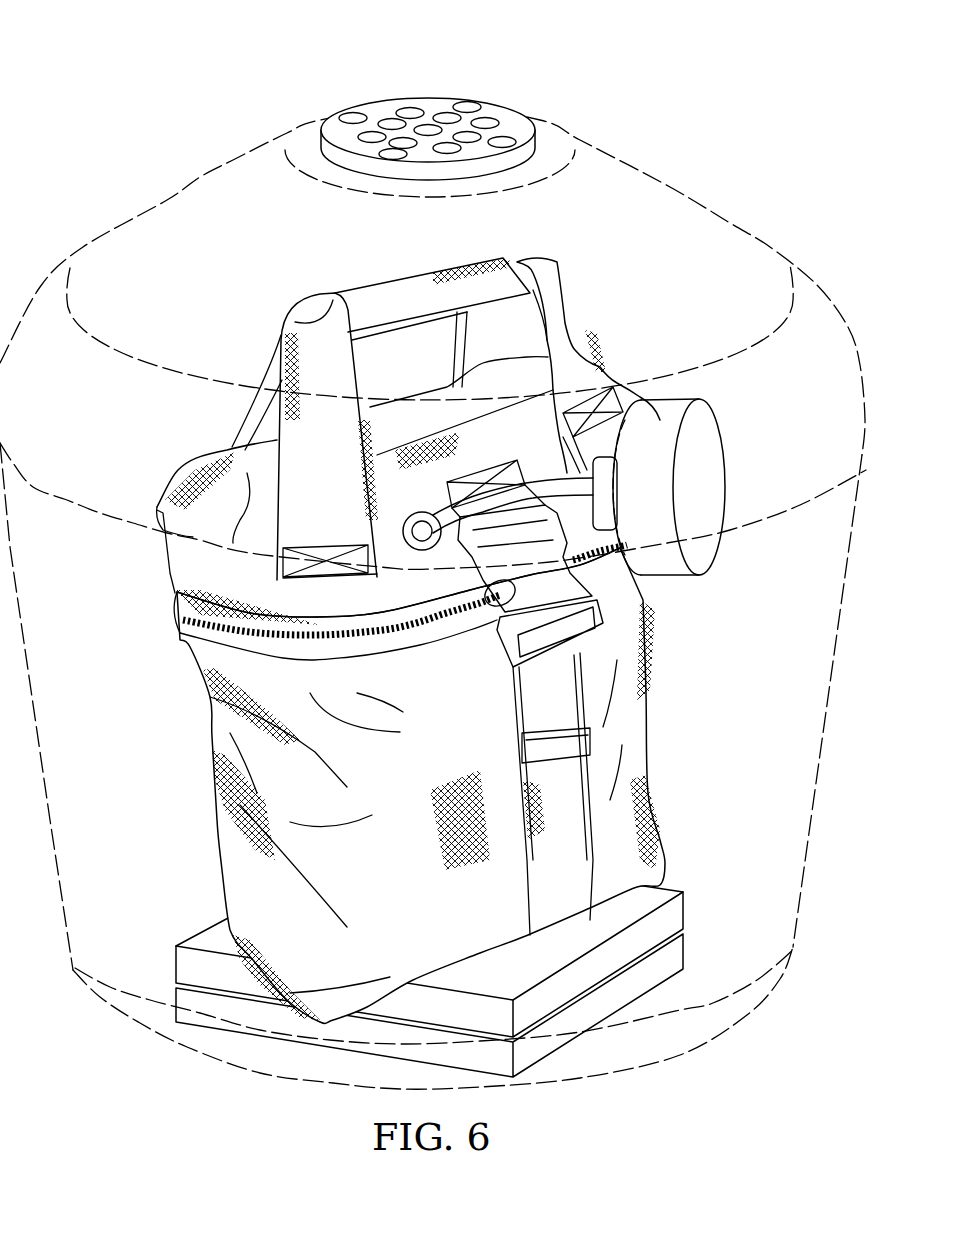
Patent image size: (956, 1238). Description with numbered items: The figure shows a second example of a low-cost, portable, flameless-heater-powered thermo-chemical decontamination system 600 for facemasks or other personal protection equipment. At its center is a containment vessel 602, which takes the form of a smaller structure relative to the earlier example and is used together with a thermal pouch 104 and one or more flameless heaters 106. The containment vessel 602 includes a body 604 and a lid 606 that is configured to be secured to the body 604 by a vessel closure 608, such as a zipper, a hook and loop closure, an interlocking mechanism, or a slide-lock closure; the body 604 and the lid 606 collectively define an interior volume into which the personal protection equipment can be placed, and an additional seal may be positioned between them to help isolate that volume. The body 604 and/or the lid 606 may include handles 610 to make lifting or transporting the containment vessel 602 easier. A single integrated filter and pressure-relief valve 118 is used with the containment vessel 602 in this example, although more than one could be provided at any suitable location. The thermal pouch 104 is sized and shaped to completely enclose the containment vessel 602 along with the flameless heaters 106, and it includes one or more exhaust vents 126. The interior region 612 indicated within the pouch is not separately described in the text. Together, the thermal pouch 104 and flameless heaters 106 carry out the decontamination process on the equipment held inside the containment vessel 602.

The thermo-chemical decontamination system 600 is at (116, 82).
The thermal pouch 104 is at (668, 188).
The exhaust vent 126 is at (437, 105).
The flameless heater 106 is at (176, 966).
The containment vessel 602 is at (634, 360).
The body 604 is at (648, 708).
The lid 606 is at (168, 458).
The vessel closure 608 is at (172, 612).
The handle 610 is at (363, 287).
The integrated filter and pressure-relief valve 118 is at (727, 455).
The chamber 612 is at (790, 872).